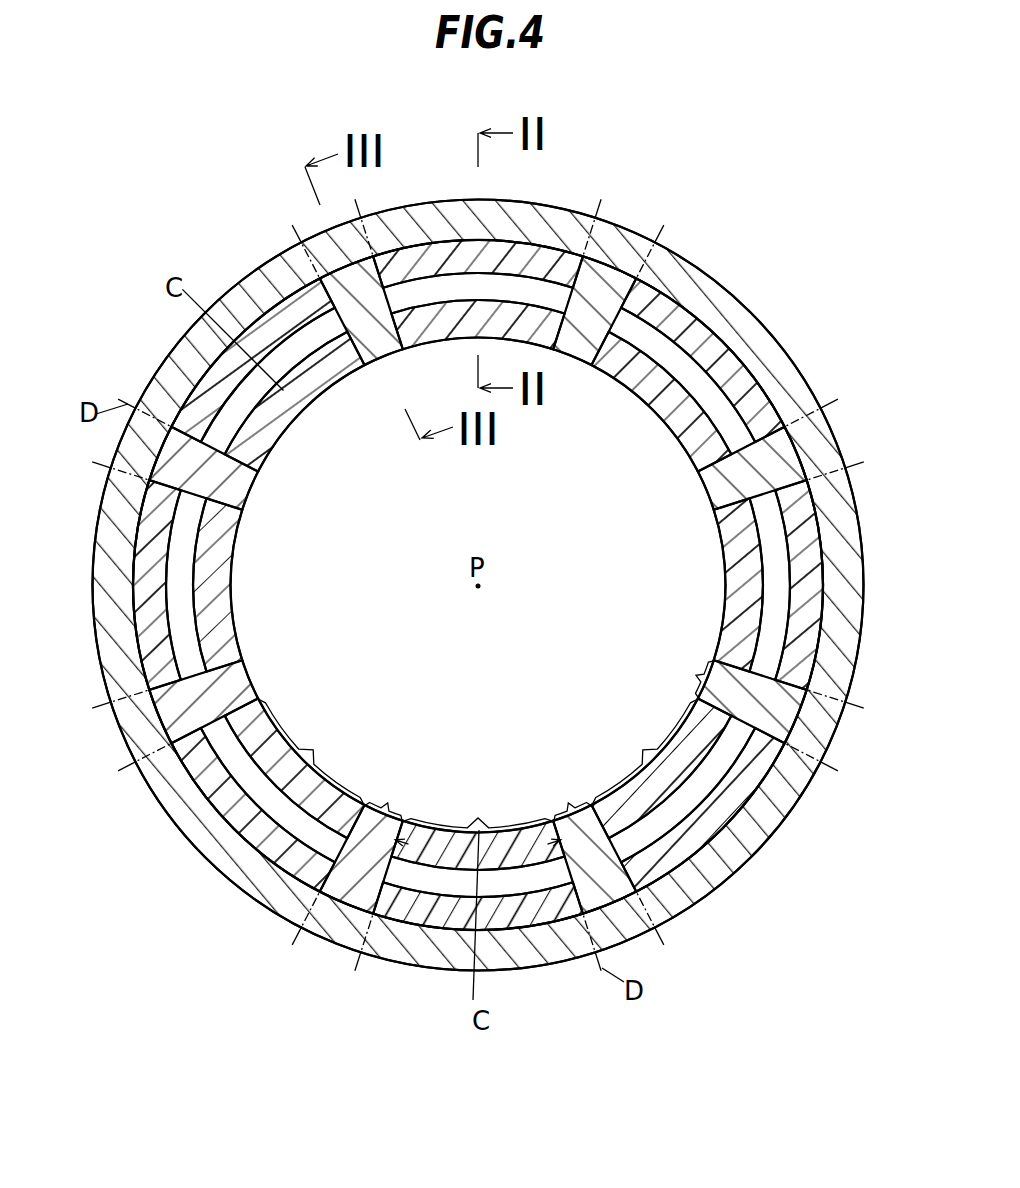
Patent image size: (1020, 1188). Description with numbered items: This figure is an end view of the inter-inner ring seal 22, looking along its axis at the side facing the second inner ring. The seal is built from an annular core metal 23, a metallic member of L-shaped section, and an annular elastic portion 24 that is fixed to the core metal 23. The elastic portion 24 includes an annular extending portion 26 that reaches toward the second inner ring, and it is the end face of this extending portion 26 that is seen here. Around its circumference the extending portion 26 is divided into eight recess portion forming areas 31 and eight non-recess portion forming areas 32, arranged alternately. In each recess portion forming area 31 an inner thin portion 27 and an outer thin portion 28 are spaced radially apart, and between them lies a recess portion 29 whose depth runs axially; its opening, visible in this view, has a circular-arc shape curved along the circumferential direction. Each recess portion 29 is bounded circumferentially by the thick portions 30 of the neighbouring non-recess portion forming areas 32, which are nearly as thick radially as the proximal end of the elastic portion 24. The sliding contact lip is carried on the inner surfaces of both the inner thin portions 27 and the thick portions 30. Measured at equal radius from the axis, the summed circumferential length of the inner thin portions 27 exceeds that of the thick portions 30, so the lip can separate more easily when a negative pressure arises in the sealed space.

The inter-inner ring seal 22 is at (569, 167).
The core metal 23 is at (160, 359).
The elastic portion 24 is at (260, 313).
The extending portion 26 is at (290, 445).
The inner thin portion 27 is at (215, 634).
The outer thin portion 28 is at (150, 545).
The recess portion 29 is at (177, 596).
The thick portion 30 is at (237, 690).
The recess portion forming area 31 is at (478, 763).
The non-recess portion forming area 32 is at (539, 748).